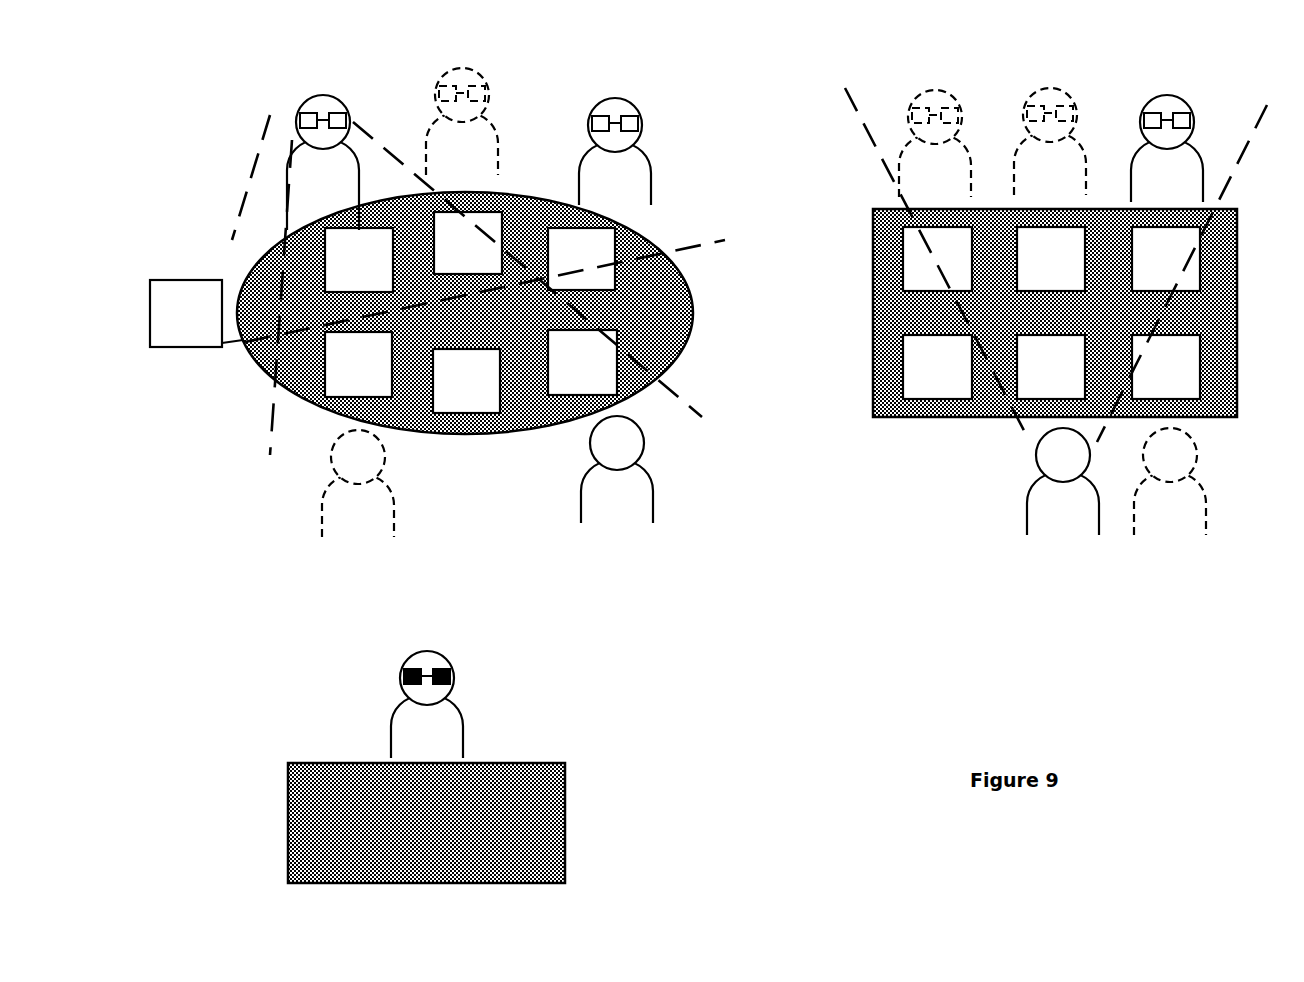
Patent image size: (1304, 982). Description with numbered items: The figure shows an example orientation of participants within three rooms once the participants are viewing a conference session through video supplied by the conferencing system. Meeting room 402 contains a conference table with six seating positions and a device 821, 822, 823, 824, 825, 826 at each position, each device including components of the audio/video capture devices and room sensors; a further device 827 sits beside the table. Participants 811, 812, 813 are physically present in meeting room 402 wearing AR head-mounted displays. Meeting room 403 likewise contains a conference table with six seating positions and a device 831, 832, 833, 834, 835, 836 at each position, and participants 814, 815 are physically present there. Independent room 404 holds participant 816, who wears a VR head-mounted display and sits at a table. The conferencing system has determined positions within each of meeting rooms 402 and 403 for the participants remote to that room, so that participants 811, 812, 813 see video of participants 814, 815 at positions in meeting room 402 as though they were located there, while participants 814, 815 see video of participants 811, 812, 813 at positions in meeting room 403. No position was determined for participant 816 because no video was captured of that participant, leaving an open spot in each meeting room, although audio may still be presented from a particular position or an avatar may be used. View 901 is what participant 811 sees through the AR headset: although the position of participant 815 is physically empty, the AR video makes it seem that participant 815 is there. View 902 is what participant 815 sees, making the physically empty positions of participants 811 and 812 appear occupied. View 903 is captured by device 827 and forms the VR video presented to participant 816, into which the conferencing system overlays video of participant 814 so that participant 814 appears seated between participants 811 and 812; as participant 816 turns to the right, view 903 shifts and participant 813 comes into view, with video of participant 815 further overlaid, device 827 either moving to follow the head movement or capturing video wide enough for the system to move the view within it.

The meeting room 402 is at (218, 101).
The meeting room 403 is at (826, 99).
The independent room 404 is at (264, 650).
The participant 811 is at (629, 160).
The participant 812 is at (832, 146).
The participant 813 is at (893, 475).
The participant 814 is at (814, 135).
The participant 815 is at (710, 482).
The participant 816 is at (427, 704).
The device 821 is at (342, 284).
The device 822 is at (451, 267).
The device 823 is at (564, 283).
The device 824 is at (565, 387).
The device 825 is at (449, 405).
The device 826 is at (341, 388).
The device 827 is at (169, 338).
The device 831 is at (920, 283).
The device 832 is at (1034, 283).
The device 833 is at (1149, 283).
The device 834 is at (1149, 391).
The device 835 is at (1034, 391).
The device 836 is at (920, 391).
The view 901 is at (719, 385).
The view 902 is at (1276, 92).
The view 903 is at (250, 185).